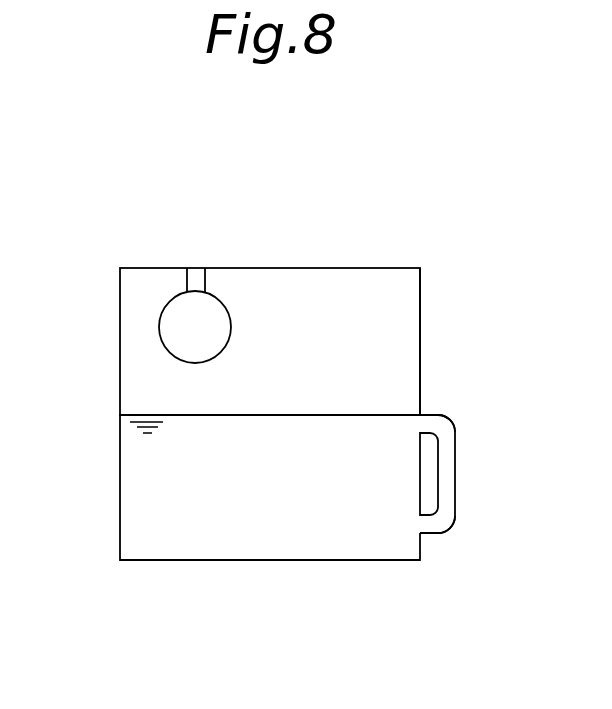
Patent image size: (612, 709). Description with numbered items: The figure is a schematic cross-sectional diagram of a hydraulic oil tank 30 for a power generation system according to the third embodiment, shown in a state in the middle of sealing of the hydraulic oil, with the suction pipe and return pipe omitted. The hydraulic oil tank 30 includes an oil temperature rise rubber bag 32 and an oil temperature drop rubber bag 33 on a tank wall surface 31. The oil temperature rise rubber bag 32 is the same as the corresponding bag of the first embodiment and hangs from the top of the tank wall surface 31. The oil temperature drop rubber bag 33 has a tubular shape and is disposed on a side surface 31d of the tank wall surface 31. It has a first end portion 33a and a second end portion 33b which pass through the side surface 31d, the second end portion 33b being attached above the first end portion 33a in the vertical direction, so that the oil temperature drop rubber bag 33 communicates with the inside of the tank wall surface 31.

The hydraulic oil tank 30 is at (267, 232).
The tank wall surface 31 is at (120, 508).
The side surface 31d is at (420, 311).
The oil temperature rise rubber bag 32 is at (162, 310).
The oil temperature drop rubber bag 33 is at (447, 478).
The first end portion 33a is at (432, 540).
The second end portion 33b is at (432, 408).